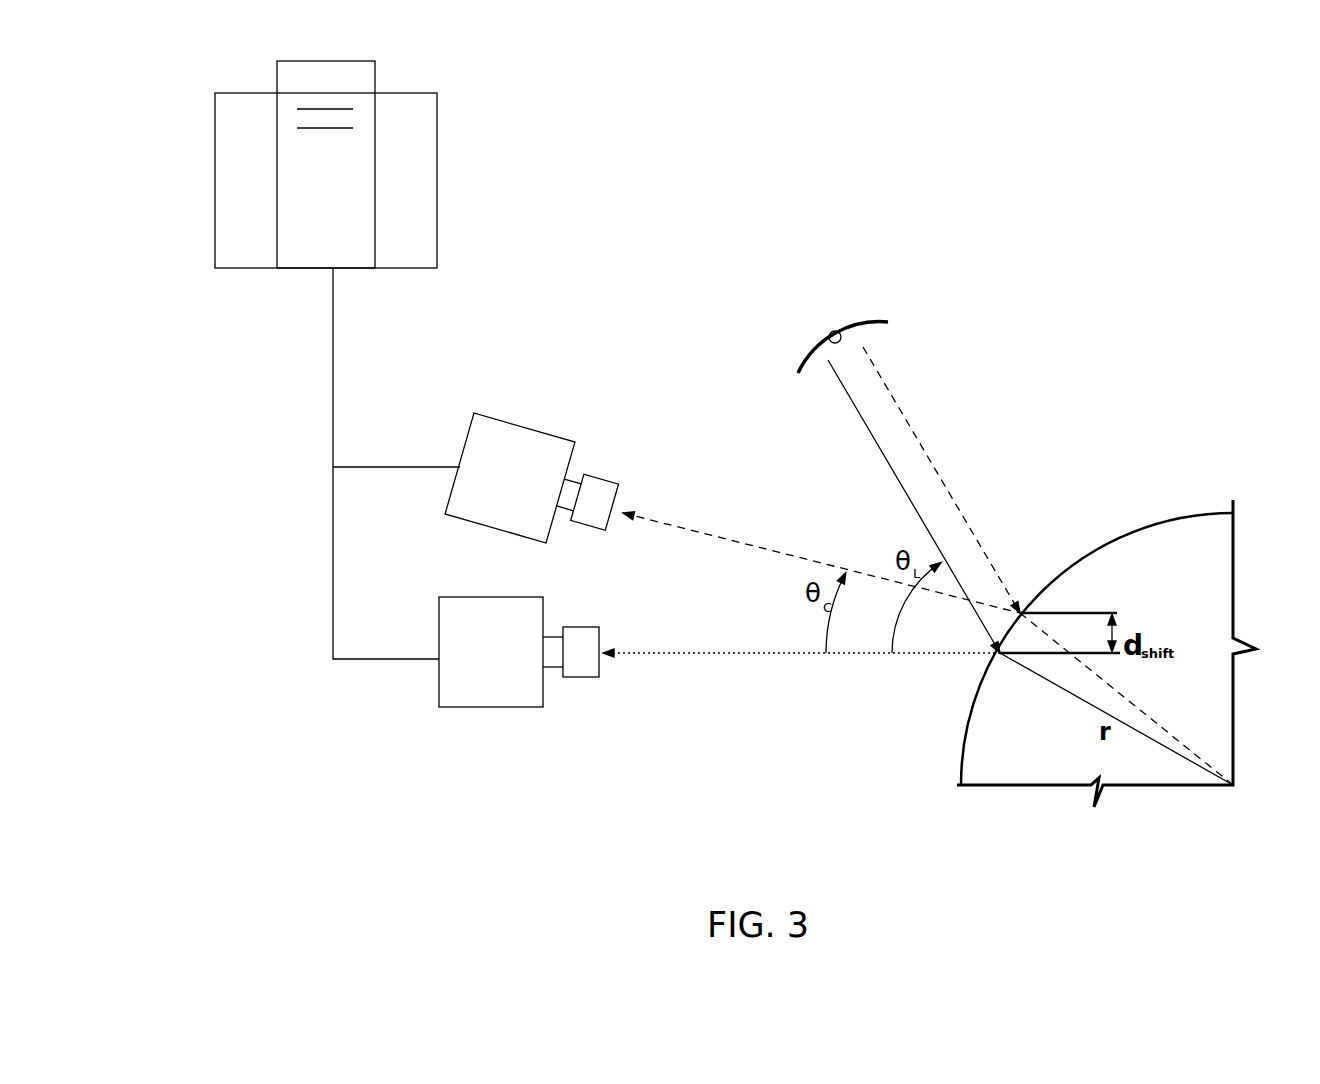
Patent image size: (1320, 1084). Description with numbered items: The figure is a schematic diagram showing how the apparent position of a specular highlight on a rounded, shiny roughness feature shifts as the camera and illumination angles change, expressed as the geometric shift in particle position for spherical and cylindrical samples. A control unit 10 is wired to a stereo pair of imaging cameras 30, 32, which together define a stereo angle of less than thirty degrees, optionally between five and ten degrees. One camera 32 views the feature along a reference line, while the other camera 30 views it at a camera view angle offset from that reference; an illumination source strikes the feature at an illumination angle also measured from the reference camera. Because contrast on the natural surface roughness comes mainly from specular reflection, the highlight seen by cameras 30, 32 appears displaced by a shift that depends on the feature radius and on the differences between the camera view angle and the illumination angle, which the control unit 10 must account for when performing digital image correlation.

The control unit 10 is at (213, 178).
The imaging camera 30 is at (538, 428).
The imaging camera 32 is at (500, 707).